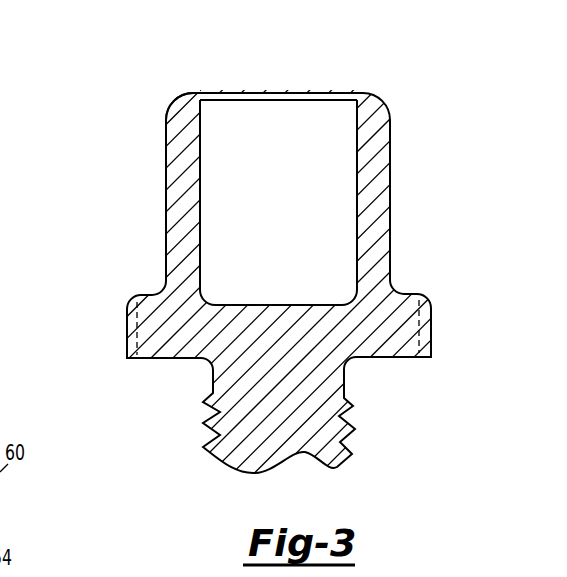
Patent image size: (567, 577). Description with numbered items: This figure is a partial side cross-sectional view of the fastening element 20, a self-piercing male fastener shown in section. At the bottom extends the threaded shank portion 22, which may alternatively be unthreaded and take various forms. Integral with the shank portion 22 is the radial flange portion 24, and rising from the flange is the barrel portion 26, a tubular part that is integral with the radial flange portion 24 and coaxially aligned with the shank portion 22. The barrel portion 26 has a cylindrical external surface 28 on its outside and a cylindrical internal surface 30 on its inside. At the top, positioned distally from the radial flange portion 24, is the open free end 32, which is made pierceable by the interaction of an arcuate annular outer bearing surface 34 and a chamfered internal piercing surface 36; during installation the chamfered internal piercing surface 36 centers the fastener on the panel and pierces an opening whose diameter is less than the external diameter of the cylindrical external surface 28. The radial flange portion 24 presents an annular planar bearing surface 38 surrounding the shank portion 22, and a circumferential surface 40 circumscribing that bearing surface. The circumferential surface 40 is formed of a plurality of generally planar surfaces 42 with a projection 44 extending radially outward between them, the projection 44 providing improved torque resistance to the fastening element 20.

The fastening element 20 is at (283, 288).
The shank portion 22 is at (298, 452).
The radial flange portion 24 is at (118, 313).
The barrel portion 26 is at (400, 185).
The cylindrical external surface 28 is at (166, 178).
The cylindrical internal surface 30 is at (357, 197).
The open free end 32 is at (297, 120).
The arcuate annular outer bearing surface 34 is at (168, 108).
The chamfered internal piercing surface 36 is at (277, 93).
The annular planar bearing surface 38 is at (173, 358).
The circumferential surface 40 is at (432, 332).
The generally planar surfaces 42 is at (431, 300).
The projection 44 is at (127, 338).